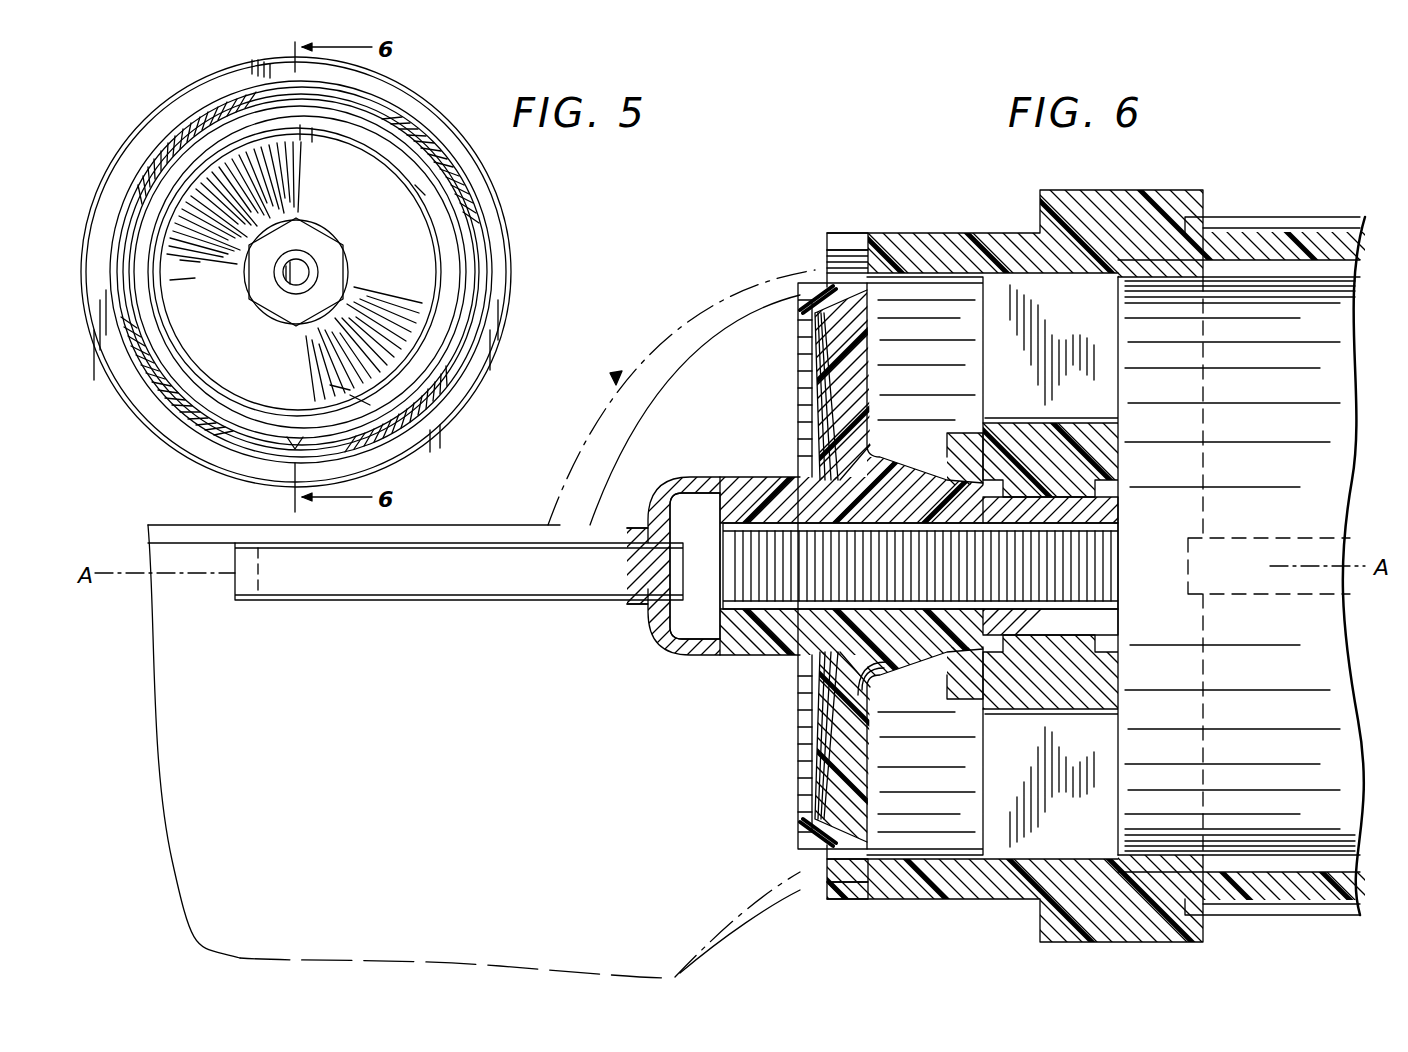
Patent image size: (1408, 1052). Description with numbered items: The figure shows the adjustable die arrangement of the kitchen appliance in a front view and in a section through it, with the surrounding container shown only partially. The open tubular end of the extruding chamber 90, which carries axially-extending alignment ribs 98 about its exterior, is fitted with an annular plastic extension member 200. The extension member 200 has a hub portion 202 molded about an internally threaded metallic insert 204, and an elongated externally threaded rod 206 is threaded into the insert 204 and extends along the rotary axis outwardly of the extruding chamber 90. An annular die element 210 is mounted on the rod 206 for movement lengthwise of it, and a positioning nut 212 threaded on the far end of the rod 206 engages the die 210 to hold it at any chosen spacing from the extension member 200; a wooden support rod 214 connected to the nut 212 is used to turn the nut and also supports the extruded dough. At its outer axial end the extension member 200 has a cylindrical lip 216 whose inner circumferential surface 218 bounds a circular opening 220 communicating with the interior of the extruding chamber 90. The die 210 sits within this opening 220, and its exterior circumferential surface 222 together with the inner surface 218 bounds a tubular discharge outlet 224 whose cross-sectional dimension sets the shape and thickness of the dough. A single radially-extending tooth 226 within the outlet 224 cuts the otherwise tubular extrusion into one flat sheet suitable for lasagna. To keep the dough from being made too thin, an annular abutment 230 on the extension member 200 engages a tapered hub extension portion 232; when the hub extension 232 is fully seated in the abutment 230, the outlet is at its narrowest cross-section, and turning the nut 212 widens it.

In FIG. 6, the extruding chamber 90 is at (1222, 268).
In FIG. 6, the alignment ribs 98 is at (1293, 226).
In FIG. 5, the extension member 200 is at (500, 246).
In FIG. 6, the extension member 200 is at (991, 231).
In FIG. 6, the hub portion 202 is at (1100, 455).
In FIG. 6, the metallic insert 204 is at (1108, 507).
In FIG. 6, the externally threaded rod 206 is at (1110, 580).
In FIG. 5, the die element 210 is at (410, 290).
In FIG. 6, the die element 210 is at (887, 499).
In FIG. 5, the positioning nut 212 is at (330, 250).
In FIG. 6, the positioning nut 212 is at (751, 498).
In FIG. 5, the support rod 214 is at (292, 284).
In FIG. 6, the support rod 214 is at (520, 590).
In FIG. 6, the cylindrical lip 216 is at (827, 242).
In FIG. 6, the inner circumferential surface 218 is at (856, 268).
In FIG. 6, the circular opening 220 is at (825, 277).
In FIG. 6, the exterior circumferential surface 222 is at (800, 292).
In FIG. 5, the tubular discharge outlet 224 is at (460, 341).
In FIG. 6, the tubular discharge outlet 224 is at (858, 280).
In FIG. 5, the tooth 226 is at (290, 442).
In FIG. 6, the tooth 226 is at (800, 868).
In FIG. 6, the annular abutment 230 is at (968, 438).
In FIG. 6, the tapered hub extension portion 232 is at (902, 668).